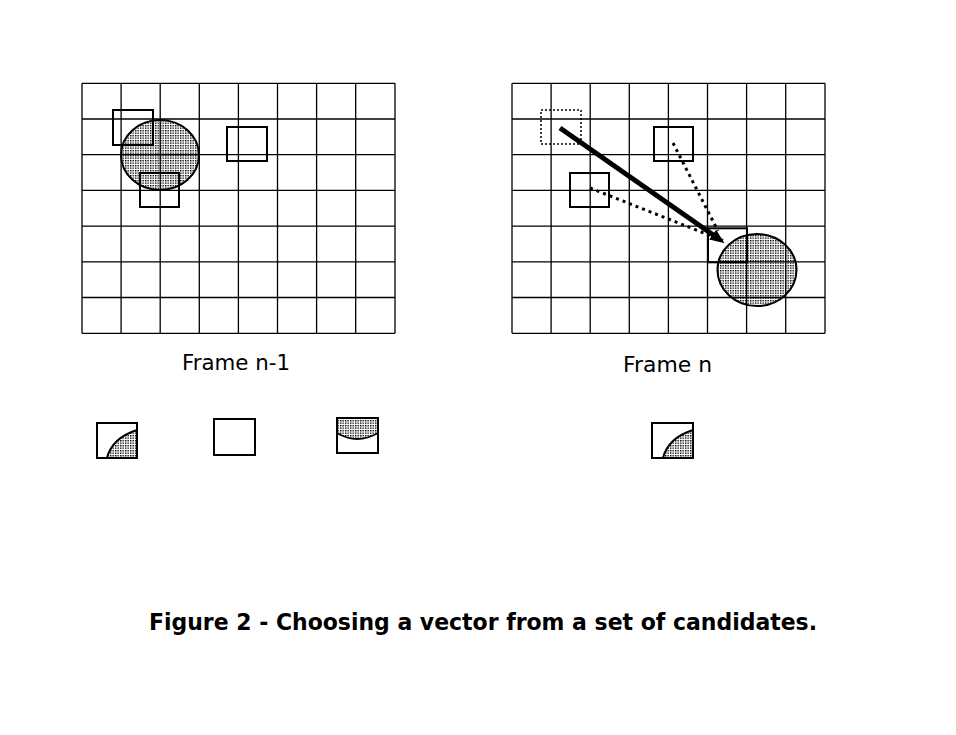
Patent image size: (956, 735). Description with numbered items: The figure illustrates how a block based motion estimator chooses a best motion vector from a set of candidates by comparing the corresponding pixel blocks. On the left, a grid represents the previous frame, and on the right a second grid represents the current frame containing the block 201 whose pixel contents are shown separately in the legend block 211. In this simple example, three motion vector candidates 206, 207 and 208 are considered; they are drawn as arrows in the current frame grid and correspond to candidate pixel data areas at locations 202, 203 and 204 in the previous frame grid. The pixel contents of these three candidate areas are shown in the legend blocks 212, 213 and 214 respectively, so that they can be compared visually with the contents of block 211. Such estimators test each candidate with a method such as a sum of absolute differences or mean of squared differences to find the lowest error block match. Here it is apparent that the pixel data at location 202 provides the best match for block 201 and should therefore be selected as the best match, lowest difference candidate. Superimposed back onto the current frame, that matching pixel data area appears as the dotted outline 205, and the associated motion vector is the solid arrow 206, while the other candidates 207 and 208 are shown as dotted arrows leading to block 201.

The block 201 is at (727, 227).
The candidate pixel data area location 202 is at (138, 110).
The candidate pixel data area location 203 is at (250, 127).
The candidate pixel data area location 204 is at (140, 193).
The matching pixel data area 205 is at (565, 107).
The motion vector candidate 206 is at (602, 150).
The motion vector candidate 207 is at (695, 185).
The motion vector candidate 208 is at (647, 212).
The pixel contents of block 211 is at (672, 456).
The pixel contents of candidate area 212 is at (117, 454).
The pixel contents of candidate area 213 is at (234, 452).
The pixel contents of candidate area 214 is at (357, 450).